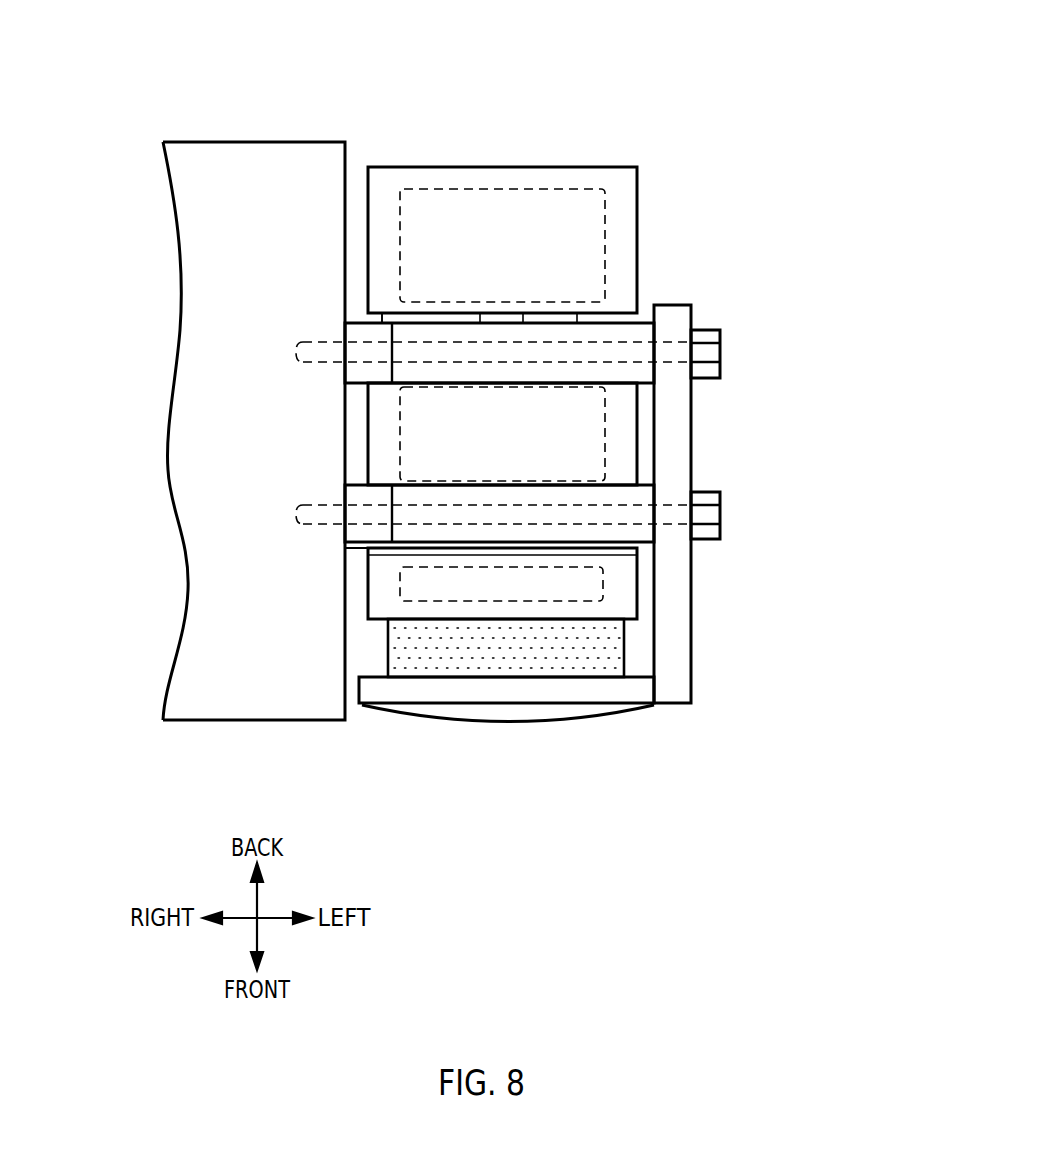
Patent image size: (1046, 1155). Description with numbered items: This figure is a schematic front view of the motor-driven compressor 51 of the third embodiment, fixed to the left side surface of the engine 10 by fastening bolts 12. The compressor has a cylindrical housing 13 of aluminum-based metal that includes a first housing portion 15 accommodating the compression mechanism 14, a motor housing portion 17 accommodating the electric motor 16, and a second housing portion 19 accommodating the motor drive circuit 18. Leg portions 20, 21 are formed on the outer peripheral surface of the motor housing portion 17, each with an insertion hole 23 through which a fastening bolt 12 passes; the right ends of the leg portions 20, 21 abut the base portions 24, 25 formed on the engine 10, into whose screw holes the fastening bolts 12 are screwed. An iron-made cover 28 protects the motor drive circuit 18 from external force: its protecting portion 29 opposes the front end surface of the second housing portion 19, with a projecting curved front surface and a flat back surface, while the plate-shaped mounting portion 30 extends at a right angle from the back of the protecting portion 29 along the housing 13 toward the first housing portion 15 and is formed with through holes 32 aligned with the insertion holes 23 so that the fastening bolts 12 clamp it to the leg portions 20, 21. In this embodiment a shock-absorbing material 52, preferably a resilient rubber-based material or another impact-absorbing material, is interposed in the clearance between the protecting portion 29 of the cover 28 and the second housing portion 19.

The engine 10 is at (222, 142).
The motor-driven compressor 51 is at (660, 148).
The fastening bolt 12 is at (720, 352).
The housing 13 is at (105, 298).
The compression mechanism 14 is at (605, 235).
The first housing portion 15 is at (368, 268).
The electric motor 16 is at (605, 432).
The motor housing portion 17 is at (368, 430).
The motor drive circuit 18 is at (603, 583).
The second housing portion 19 is at (368, 583).
The leg portion 20 is at (569, 323).
The leg portion 21 is at (532, 485).
The insertion hole 23 is at (540, 342).
The base portion 24 is at (382, 323).
The base portion 25 is at (378, 485).
The cover 28 is at (476, 722).
The protecting portion 29 is at (546, 720).
The mounting portion 30 is at (691, 617).
The through hole 32 is at (672, 334).
The shock-absorbing material 52 is at (388, 650).